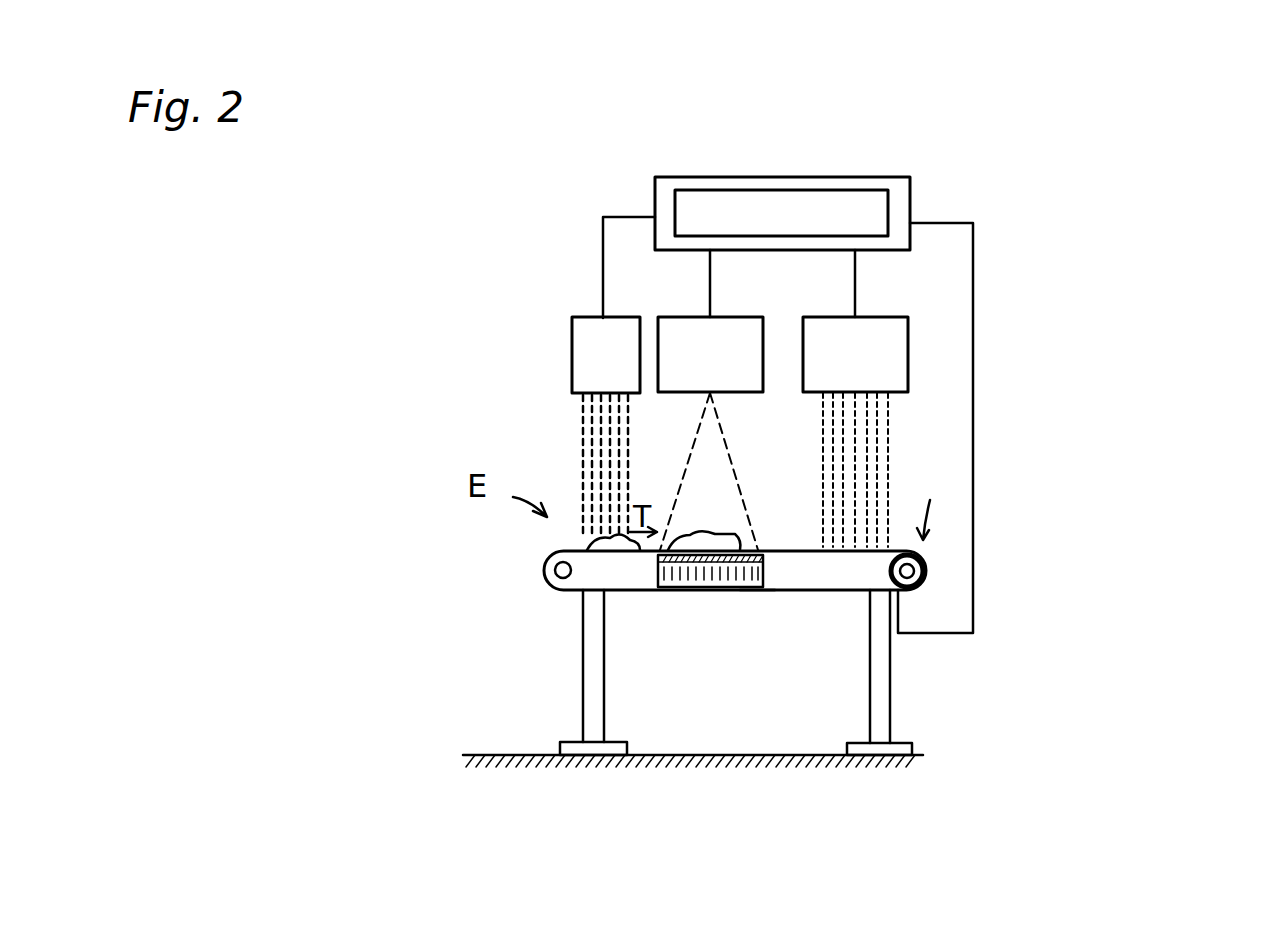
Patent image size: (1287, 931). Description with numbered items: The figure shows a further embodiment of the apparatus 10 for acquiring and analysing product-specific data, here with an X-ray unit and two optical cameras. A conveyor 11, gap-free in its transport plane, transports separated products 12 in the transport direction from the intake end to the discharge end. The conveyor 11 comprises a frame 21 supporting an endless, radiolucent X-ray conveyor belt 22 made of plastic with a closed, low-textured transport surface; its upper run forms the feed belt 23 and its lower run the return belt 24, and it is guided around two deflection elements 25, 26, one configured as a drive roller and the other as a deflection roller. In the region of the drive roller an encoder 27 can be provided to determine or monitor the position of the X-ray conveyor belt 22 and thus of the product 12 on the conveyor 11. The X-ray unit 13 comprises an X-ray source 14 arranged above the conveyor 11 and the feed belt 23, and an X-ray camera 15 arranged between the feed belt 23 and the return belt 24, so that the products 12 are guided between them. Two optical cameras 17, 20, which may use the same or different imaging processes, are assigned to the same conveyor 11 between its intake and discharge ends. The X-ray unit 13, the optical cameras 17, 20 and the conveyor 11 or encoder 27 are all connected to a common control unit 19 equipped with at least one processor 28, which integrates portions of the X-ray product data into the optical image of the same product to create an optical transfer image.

The apparatus 10 is at (1168, 187).
The conveyor 11 is at (532, 611).
The products 12 is at (617, 543).
The X-ray unit 13 is at (747, 415).
The X-ray source 14 is at (685, 315).
The X-ray camera 15 is at (703, 587).
The optical camera 17 is at (910, 338).
The common control unit 19 is at (672, 177).
The optical camera 20 is at (570, 345).
The frame 21 is at (906, 686).
The X-ray conveyor belt 22 is at (840, 593).
The feed belt 23 is at (900, 545).
The return belt 24 is at (770, 593).
The deflection element 25 is at (923, 570).
The deflection element 26 is at (573, 593).
The encoder 27 is at (913, 588).
The processor (CPU) 28 is at (781, 213).